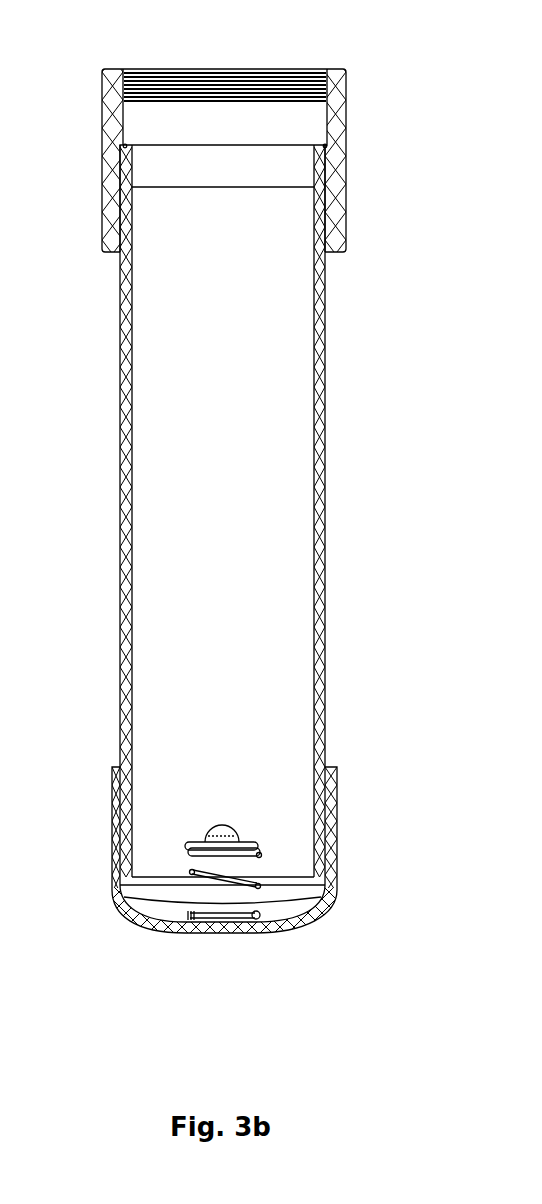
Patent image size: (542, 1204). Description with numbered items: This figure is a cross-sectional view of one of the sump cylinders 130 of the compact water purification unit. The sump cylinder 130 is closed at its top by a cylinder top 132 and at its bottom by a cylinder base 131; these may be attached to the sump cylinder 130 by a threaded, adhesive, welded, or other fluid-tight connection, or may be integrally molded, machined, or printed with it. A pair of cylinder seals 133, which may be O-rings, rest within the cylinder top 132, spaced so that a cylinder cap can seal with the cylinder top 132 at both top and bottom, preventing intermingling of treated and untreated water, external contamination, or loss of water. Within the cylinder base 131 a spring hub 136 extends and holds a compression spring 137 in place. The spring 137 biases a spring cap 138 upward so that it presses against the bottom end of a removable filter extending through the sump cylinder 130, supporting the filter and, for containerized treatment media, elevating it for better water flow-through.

The sump cylinder 130 is at (122, 466).
The cylinder base 131 is at (112, 828).
The cylinder top 132 is at (105, 182).
The cylinder seals 133 is at (333, 72).
The spring hub 136 is at (259, 917).
The compression spring 137 is at (220, 880).
The spring cap 138 is at (222, 822).